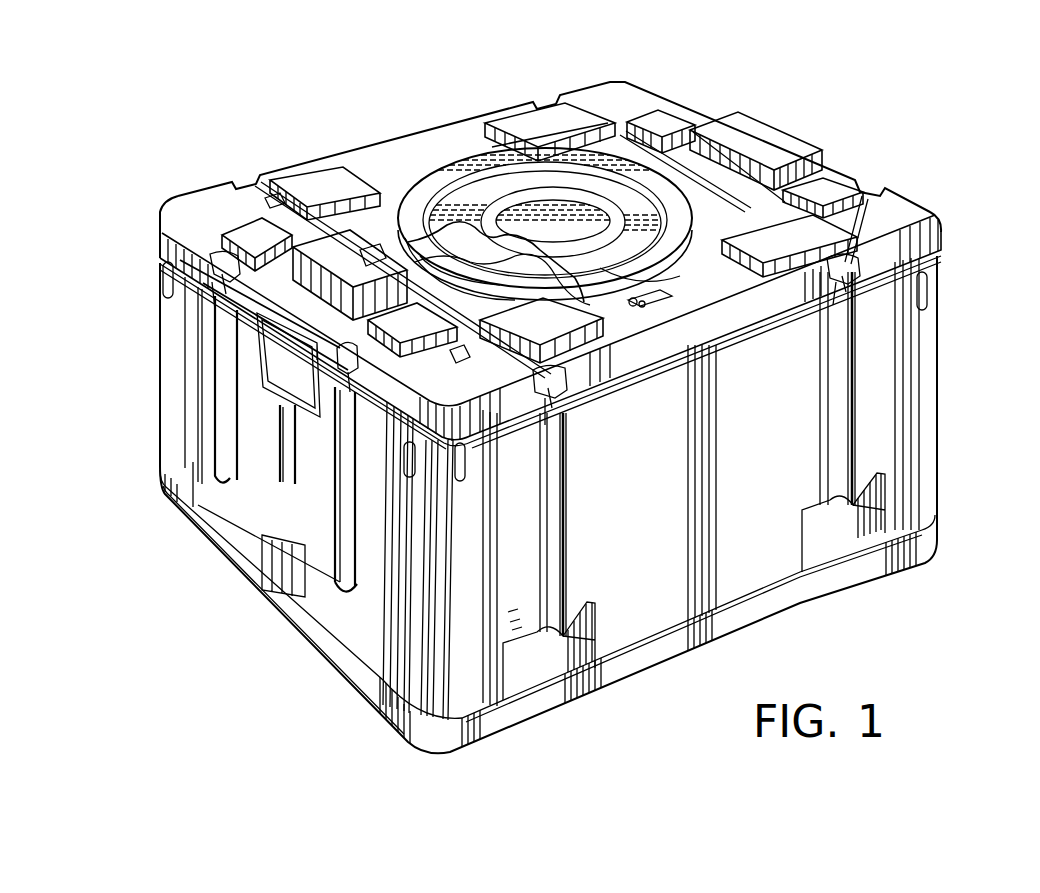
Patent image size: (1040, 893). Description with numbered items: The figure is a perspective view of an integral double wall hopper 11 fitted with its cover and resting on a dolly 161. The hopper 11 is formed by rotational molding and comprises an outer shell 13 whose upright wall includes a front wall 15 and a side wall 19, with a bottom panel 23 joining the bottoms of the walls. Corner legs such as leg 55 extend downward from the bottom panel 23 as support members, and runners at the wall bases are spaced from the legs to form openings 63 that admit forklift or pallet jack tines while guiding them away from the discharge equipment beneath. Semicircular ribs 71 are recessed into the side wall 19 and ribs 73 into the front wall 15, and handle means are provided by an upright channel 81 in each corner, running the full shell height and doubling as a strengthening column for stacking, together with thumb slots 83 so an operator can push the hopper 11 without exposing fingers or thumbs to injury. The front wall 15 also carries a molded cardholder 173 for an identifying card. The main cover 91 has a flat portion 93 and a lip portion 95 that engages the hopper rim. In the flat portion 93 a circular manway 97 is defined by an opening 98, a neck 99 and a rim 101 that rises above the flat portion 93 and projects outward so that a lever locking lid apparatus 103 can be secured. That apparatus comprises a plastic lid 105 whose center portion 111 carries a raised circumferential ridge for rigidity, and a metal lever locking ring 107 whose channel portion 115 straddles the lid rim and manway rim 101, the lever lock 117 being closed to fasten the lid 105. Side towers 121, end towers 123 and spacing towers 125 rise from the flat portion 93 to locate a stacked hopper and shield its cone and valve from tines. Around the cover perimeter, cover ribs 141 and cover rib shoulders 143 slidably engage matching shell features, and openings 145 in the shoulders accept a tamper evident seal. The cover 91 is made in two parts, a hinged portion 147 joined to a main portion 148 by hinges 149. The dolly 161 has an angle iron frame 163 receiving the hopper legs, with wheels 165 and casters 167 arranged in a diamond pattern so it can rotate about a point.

The hopper 11 is at (963, 398).
The outer shell 13 is at (173, 423).
The front wall 15 is at (260, 456).
The side wall 19 is at (752, 545).
The bottom panel 23 is at (580, 690).
The leg 55 is at (920, 504).
The opening 63 is at (918, 545).
The rib 71 is at (553, 495).
The rib 73 is at (222, 418).
The upright channel 81 is at (433, 547).
The thumb slot 83 is at (165, 282).
The main cover 91 is at (559, 265).
The flat portion 93 is at (920, 220).
The lip portion 95 is at (942, 246).
The manway 97 is at (556, 242).
The opening 98 is at (525, 272).
The manway neck 99 is at (492, 290).
The manway rim 101 is at (453, 272).
The lever locking lid apparatus 103 is at (575, 244).
The lid 105 is at (676, 208).
The lever locking ring 107 is at (643, 303).
The center portion 111 is at (662, 216).
The channel portion 115 is at (670, 276).
The lever lock 117 is at (670, 302).
The side tower 121 is at (565, 100).
The end tower 123 is at (678, 120).
The spacing tower 125 is at (760, 135).
The cover rib 141 is at (210, 259).
The cover rib shoulder 143 is at (227, 282).
The opening 145 is at (207, 285).
The hinged portion 147 is at (178, 200).
The main portion 148 is at (433, 145).
The hinge 149 is at (246, 186).
The dolly 161 is at (856, 583).
The frame 163 is at (823, 583).
The wheel 165 is at (657, 667).
The caster 167 is at (305, 618).
The cardholder 173 is at (305, 418).